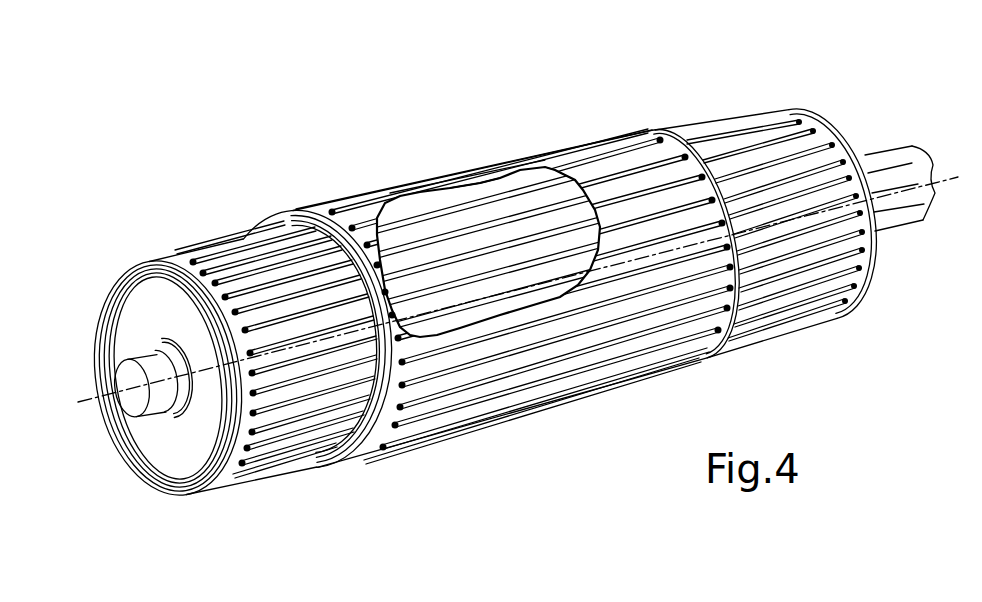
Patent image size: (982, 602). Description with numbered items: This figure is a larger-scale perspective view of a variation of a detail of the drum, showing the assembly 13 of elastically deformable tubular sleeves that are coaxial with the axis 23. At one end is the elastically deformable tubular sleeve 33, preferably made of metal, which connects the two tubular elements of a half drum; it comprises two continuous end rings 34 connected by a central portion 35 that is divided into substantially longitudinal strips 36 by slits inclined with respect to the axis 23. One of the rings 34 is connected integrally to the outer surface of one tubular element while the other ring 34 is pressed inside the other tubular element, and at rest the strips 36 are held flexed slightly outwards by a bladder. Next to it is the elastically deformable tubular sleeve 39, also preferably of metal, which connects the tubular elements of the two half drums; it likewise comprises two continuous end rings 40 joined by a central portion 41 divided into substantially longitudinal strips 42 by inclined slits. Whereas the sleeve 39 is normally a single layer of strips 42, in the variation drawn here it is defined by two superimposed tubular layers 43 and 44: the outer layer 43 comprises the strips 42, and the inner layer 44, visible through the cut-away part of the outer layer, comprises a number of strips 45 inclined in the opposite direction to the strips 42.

The rotor 13 is at (181, 217).
The axis 23 is at (80, 400).
The elastically deformable tubular sleeve 33 is at (148, 250).
The continuous end ring 34 is at (200, 488).
The central portion 35 is at (236, 233).
The strips 36 is at (298, 423).
The elastically deformable tubular sleeve 39 is at (447, 163).
The continuous end ring 40 is at (318, 210).
The central portion 41 is at (482, 163).
The strips 42 is at (633, 165).
The outer layer 43 is at (574, 157).
The inner layer 44 is at (538, 200).
The strips 45 is at (430, 222).